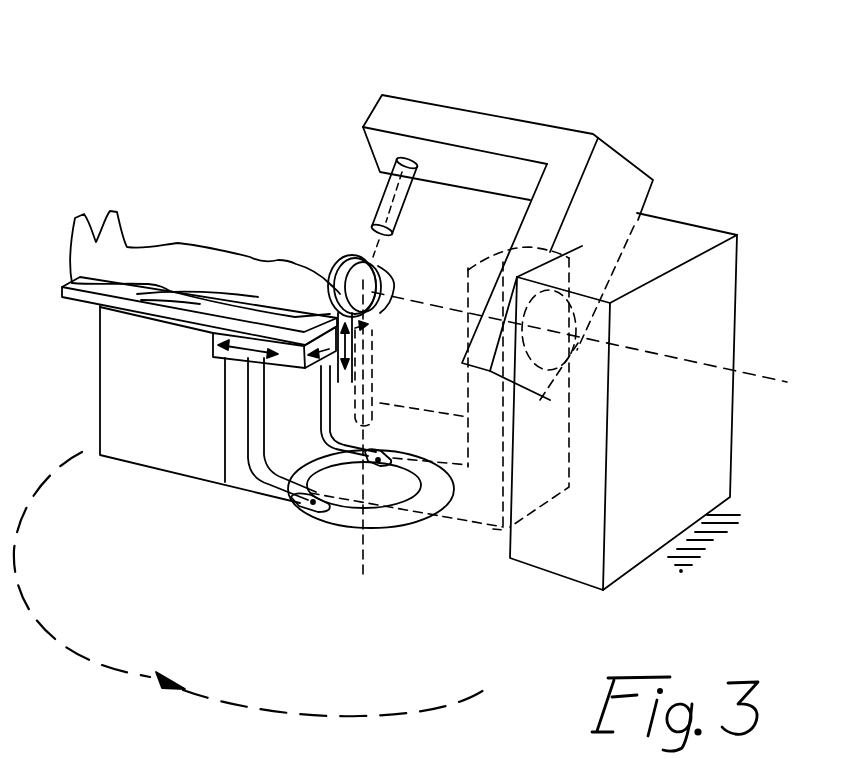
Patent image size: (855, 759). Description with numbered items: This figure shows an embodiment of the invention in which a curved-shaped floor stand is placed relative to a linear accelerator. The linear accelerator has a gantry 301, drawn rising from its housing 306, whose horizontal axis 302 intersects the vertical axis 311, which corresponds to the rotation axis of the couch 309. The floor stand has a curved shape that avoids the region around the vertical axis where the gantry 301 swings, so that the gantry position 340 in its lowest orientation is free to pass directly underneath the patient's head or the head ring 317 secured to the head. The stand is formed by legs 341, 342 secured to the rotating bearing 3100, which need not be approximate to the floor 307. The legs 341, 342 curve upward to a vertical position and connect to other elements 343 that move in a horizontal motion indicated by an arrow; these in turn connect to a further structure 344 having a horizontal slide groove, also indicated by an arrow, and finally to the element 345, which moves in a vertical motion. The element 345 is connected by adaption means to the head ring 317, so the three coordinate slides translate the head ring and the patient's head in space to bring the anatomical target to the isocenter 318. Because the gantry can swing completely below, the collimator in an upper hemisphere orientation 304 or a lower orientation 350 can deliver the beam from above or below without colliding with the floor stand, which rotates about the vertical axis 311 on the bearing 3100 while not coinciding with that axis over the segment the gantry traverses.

The gantry 301 is at (503, 117).
The horizontal axis 302 is at (591, 337).
The collimator in an upper hemisphere orientation 304 is at (387, 190).
The gantry housing 306 is at (690, 217).
The floor 307 is at (708, 542).
The couch 309 is at (110, 393).
The vertical axis 311 is at (372, 580).
The head ring 317 is at (342, 253).
The isocenter 318 is at (383, 273).
The gantry position 340 is at (390, 400).
The leg 341 is at (240, 476).
The leg 342 is at (330, 382).
The horizontally moving elements 343 is at (213, 360).
The structure with horizontal slide groove 344 is at (338, 378).
The vertically moving element 345 is at (320, 313).
The collimator in a lower orientation 350 is at (380, 357).
The rotating bearing 3100 is at (332, 515).